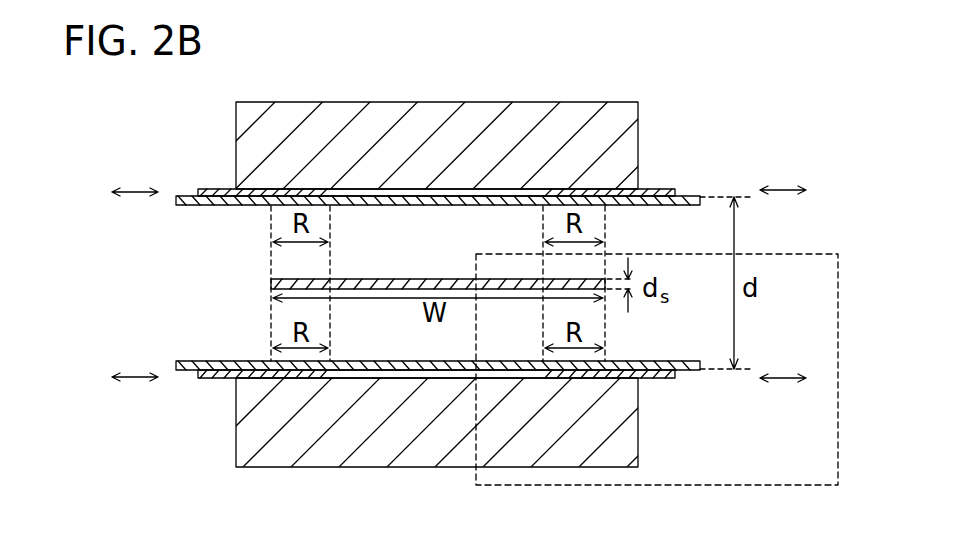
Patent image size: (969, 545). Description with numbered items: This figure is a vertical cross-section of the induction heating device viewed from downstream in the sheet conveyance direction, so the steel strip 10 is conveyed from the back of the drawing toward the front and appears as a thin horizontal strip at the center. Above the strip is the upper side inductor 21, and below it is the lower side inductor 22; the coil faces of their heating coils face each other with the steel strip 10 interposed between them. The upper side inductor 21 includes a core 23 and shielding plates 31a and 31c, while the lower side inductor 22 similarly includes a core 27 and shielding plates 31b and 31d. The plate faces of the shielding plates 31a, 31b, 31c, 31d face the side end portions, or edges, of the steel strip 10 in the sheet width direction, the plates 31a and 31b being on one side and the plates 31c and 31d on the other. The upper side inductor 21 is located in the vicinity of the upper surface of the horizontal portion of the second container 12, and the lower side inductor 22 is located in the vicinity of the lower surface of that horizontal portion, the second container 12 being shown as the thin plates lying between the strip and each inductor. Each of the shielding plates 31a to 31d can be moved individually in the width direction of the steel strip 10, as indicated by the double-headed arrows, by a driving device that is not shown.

The steel strip 10 is at (440, 278).
The second container 12 is at (192, 201).
The upper side inductor 21 is at (659, 126).
The lower side inductor 22 is at (656, 439).
The core 23 is at (252, 138).
The core 27 is at (252, 420).
The shielding plate 31a is at (189, 195).
The shielding plate 31b is at (189, 383).
The shielding plate 31c is at (687, 192).
The shielding plate 31d is at (684, 381).